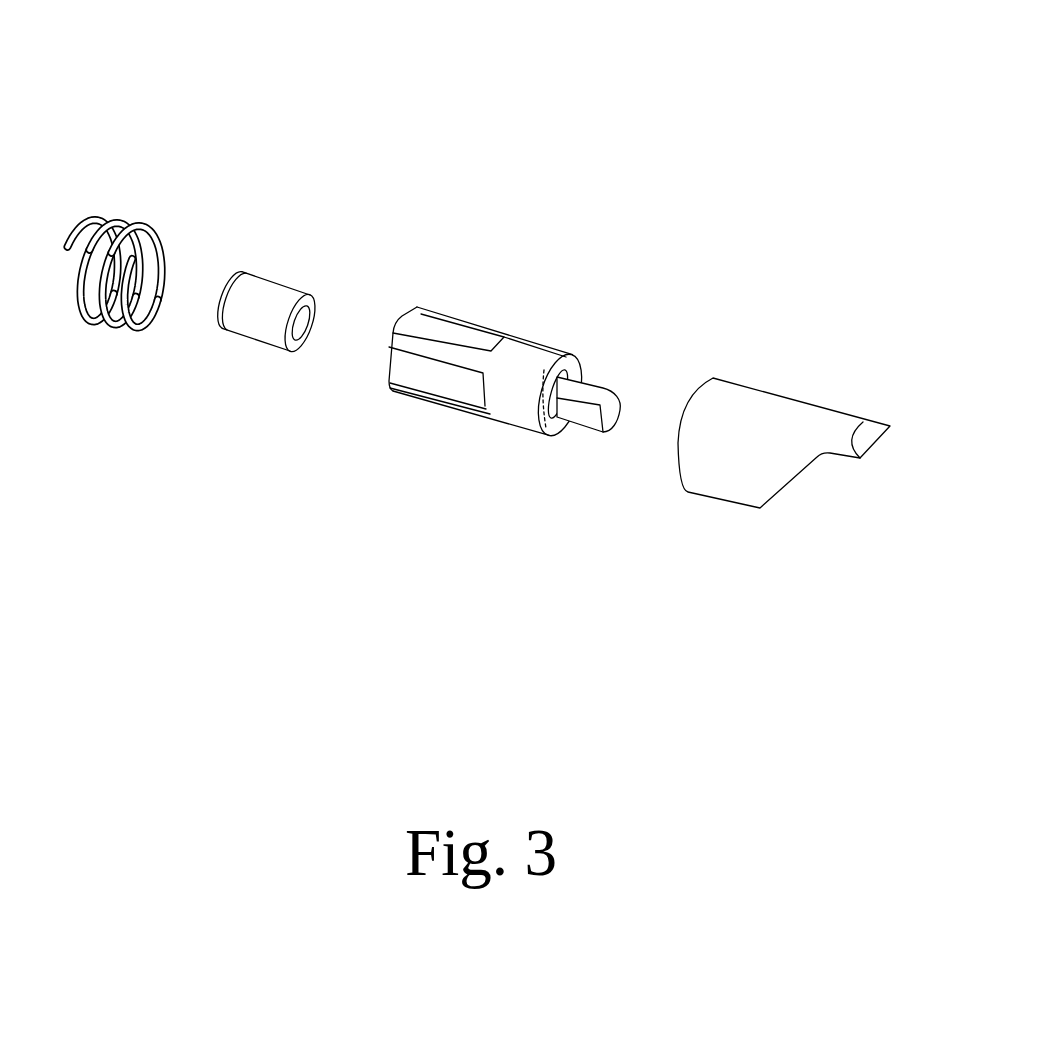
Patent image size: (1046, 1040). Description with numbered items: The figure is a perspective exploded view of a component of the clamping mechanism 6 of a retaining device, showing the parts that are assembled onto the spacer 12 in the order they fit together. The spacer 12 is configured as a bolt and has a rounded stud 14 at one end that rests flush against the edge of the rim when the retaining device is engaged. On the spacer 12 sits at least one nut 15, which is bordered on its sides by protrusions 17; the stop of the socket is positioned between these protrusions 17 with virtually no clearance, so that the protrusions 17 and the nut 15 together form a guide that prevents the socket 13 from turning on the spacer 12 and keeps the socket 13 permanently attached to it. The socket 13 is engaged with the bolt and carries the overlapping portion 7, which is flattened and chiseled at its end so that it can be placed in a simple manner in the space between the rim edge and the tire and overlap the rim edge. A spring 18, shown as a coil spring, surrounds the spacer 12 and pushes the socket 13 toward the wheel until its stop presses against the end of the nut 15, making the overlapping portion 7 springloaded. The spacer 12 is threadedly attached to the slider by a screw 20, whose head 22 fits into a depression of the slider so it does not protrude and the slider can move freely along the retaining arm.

The clamping mechanism 6 is at (546, 181).
The overlapping portion 7 is at (863, 420).
The spacer 12 is at (517, 339).
The socket 13 is at (790, 447).
The rounded stud 14 is at (588, 387).
The nut 15 is at (443, 328).
The protrusion 17 is at (490, 350).
The spring 18 is at (140, 228).
The screw 20 is at (280, 295).
The head 22 is at (237, 268).